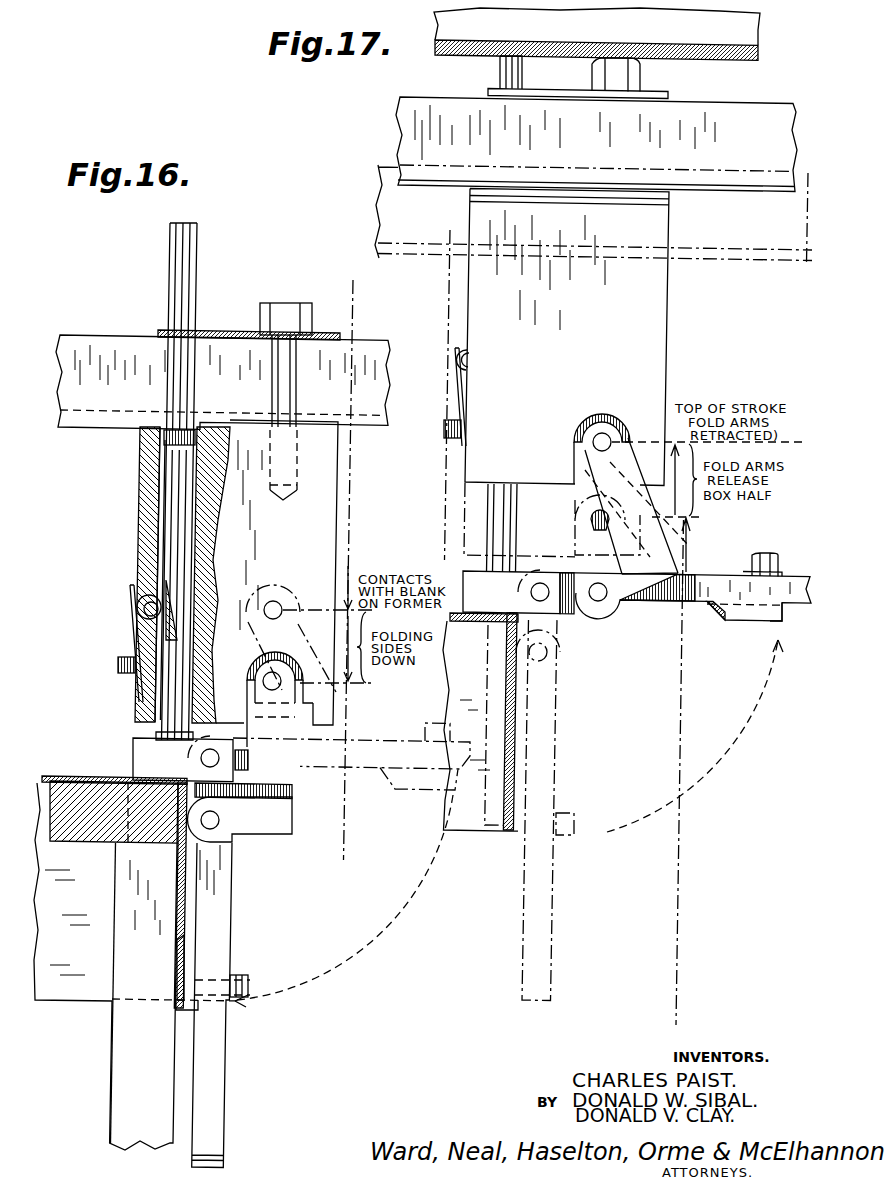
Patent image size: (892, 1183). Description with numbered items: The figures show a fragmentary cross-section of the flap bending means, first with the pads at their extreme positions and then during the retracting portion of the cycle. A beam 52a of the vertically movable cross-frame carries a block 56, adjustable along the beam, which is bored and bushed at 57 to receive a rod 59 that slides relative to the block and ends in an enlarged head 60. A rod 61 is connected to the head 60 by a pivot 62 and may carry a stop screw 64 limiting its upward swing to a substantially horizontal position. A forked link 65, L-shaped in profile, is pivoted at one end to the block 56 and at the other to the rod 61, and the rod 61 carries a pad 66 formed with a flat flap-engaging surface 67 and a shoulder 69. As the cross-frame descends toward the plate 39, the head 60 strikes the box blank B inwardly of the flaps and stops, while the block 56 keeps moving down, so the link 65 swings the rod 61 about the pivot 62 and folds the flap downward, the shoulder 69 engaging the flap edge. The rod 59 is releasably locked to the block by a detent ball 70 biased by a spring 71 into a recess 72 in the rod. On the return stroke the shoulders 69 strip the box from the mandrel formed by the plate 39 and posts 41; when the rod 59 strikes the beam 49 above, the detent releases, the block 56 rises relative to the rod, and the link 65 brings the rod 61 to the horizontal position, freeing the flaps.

In FIG. 16, the plate 39 is at (90, 800).
In FIG. 16, the posts 41 is at (126, 910).
In FIG. 17, the beam 49 is at (435, 46).
In FIG. 16, the beam 52a is at (105, 350).
In FIG. 17, the beam 52a is at (750, 115).
In FIG. 16, the block 56 is at (336, 496).
In FIG. 17, the block 56 is at (666, 308).
In FIG. 16, the bushing 57 is at (158, 522).
In FIG. 16, the rod 59 is at (172, 548).
In FIG. 17, the rod 59 is at (490, 508).
In FIG. 16, the head 60 is at (140, 748).
In FIG. 17, the head 60 is at (470, 571).
In FIG. 16, the rod 61 is at (400, 740).
In FIG. 17, the rod 61 is at (716, 580).
In FIG. 16, the pivot 62 is at (200, 758).
In FIG. 17, the pivot 62 is at (540, 580).
In FIG. 16, the stop screw 64 is at (247, 750).
In FIG. 16, the forked link 65 is at (262, 641).
In FIG. 17, the forked link 65 is at (588, 456).
In FIG. 16, the pad 66 is at (195, 960).
In FIG. 17, the pad 66 is at (762, 624).
In FIG. 16, the flap-engaging surface 67 is at (181, 962).
In FIG. 17, the flap-engaging surface 67 is at (726, 623).
In FIG. 16, the shoulder 69 is at (180, 1005).
In FIG. 16, the ball 70 is at (137, 605).
In FIG. 17, the ball 70 is at (461, 352).
In FIG. 16, the spring 71 is at (133, 646).
In FIG. 17, the spring 71 is at (457, 378).
In FIG. 16, the recess 72 is at (168, 600).
In FIG. 16, the box blank B is at (50, 781).
In FIG. 17, the box blank B is at (515, 712).